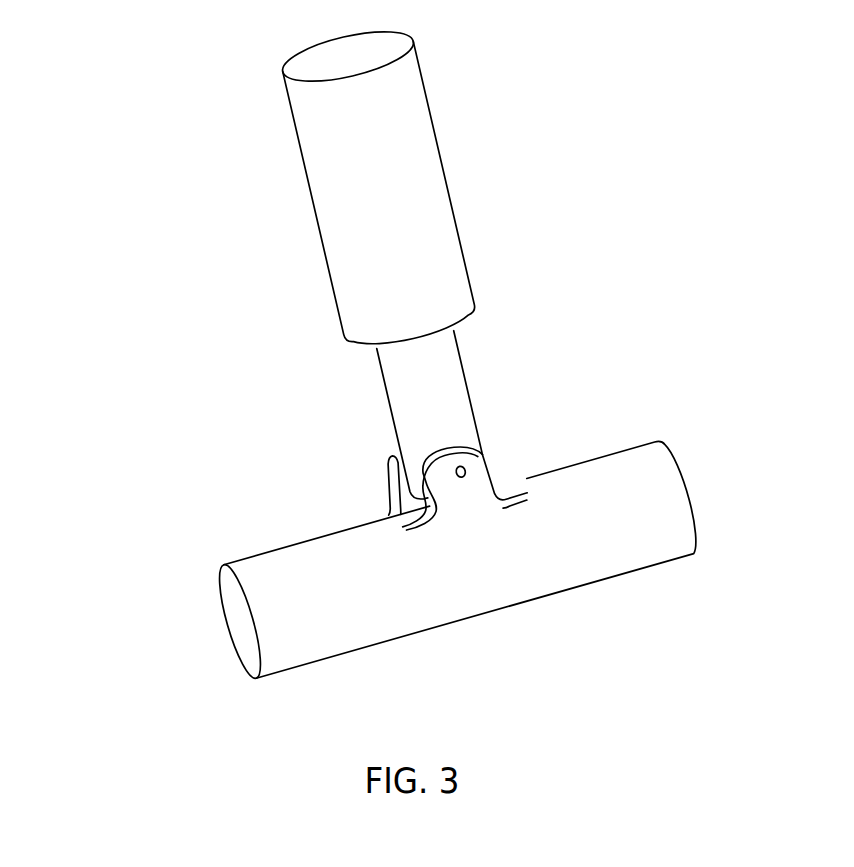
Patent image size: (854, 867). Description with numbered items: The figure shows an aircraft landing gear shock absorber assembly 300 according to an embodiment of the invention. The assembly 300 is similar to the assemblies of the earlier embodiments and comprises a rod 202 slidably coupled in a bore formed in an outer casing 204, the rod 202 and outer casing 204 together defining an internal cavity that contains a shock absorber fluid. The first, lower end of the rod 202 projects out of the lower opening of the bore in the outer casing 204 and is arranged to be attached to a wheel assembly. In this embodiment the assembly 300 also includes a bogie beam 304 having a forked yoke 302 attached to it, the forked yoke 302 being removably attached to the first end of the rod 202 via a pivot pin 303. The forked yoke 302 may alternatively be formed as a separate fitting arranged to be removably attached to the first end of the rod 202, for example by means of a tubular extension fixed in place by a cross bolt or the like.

The aircraft landing gear shock absorber assembly 300 is at (203, 137).
The outer casing 204 is at (325, 193).
The rod 202 is at (445, 342).
The forked yoke 302 is at (388, 474).
The pivot pin 303 is at (467, 471).
The bogie beam 304 is at (617, 486).